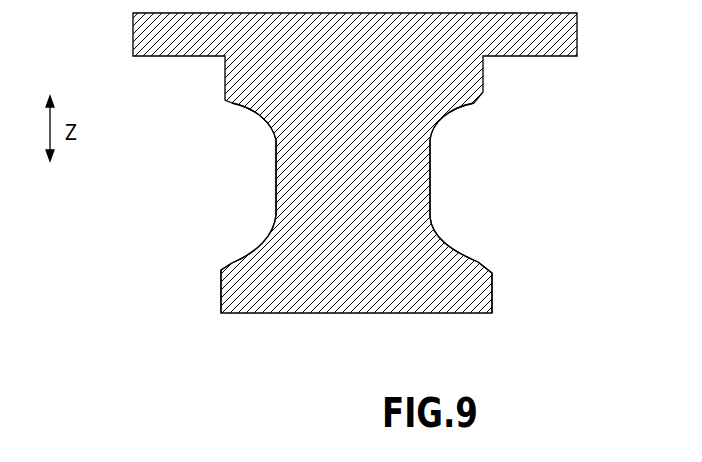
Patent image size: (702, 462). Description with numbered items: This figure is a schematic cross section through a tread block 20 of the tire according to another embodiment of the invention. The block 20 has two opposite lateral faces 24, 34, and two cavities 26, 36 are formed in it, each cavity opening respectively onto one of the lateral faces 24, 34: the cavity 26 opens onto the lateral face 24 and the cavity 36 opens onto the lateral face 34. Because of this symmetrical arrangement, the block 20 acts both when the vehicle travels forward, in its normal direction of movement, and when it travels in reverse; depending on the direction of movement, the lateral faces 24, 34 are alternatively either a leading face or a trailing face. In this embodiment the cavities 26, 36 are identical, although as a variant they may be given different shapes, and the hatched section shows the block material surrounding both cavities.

The block 20 is at (106, 245).
The lateral face 24 is at (493, 295).
The cavity 26 is at (466, 180).
The lateral face 34 is at (220, 291).
The cavity 36 is at (257, 180).